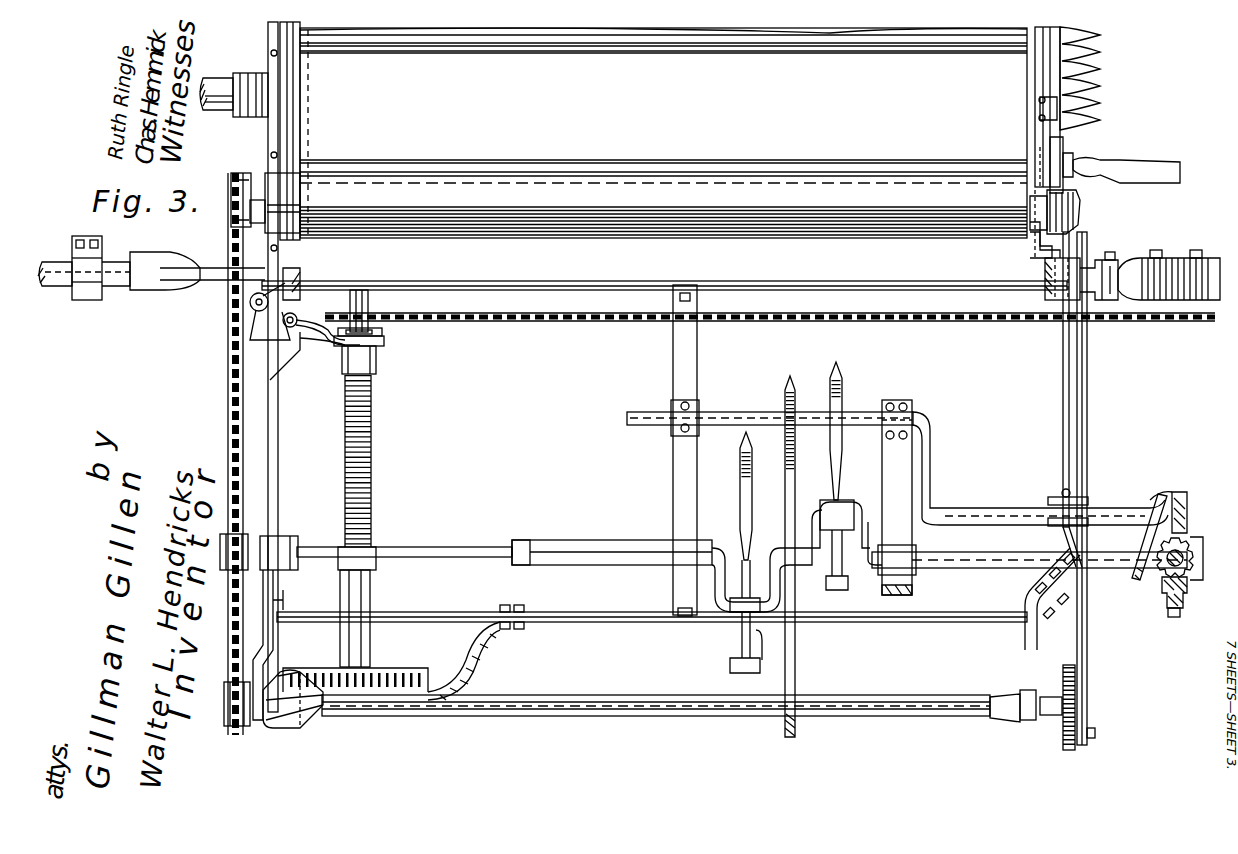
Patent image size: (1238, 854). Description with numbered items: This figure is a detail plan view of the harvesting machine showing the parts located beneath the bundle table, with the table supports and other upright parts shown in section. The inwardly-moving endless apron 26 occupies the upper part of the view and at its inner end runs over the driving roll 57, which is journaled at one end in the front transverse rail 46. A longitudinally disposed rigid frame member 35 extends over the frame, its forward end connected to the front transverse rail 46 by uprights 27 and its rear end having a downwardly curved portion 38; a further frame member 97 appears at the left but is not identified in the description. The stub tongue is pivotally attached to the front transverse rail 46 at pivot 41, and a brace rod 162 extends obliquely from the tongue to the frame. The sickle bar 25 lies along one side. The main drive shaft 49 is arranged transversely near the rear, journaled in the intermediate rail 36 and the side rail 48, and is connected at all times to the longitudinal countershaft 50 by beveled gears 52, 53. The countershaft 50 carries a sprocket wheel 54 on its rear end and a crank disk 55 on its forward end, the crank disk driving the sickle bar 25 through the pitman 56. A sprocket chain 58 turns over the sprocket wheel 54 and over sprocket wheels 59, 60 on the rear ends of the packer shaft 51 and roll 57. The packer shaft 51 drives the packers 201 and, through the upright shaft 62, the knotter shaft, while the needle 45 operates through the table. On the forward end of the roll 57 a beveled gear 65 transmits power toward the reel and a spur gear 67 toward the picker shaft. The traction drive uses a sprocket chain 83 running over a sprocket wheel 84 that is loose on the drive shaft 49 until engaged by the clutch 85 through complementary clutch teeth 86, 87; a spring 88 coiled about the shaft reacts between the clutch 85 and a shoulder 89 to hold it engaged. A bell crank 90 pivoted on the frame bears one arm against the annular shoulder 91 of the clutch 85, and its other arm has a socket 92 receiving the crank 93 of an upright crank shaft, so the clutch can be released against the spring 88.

The sickle bar 25 is at (1100, 92).
The endless apron 26 is at (663, 133).
The uprights 27 is at (1043, 272).
The rigid frame member 35 is at (215, 80).
The intermediate rail 36 is at (527, 281).
The downwardly curved rear end portion 38 is at (52, 288).
The pivot 41 is at (1110, 262).
The needle 45 is at (790, 378).
The front transverse rail 46 is at (1063, 408).
The side rail 48 is at (612, 622).
The main drive shaft 49 is at (372, 598).
The countershaft 50 is at (614, 704).
The packer shaft 51 is at (500, 540).
The beveled gear 52 is at (398, 668).
The beveled gear 53 is at (310, 722).
The sprocket wheel 54 is at (246, 726).
The crank disk 55 is at (1070, 750).
The pitman 56 is at (1088, 645).
The driving roll 57 is at (284, 190).
The sprocket chain 58 is at (227, 628).
The sprocket wheel 59 is at (222, 538).
The sprocket wheel 60 is at (231, 186).
The upright shaft 62 is at (1182, 548).
The beveled gear 65 is at (1078, 205).
The spur gear 67 is at (1070, 225).
The sprocket chain 83 is at (504, 322).
The sprocket wheel 84 is at (382, 333).
The clutch 85 is at (378, 365).
The clutch teeth 86 is at (328, 340).
The clutch teeth 87 is at (384, 344).
The spring 88 is at (372, 452).
The shoulder 89 is at (365, 548).
The bell crank 90 is at (1178, 268).
The annular shoulder 91 is at (354, 348).
The socket 92 is at (293, 272).
The crank 93 is at (250, 298).
The frame plate 97 is at (279, 446).
The brace rod 162 is at (1130, 162).
The packers 201 is at (843, 388).